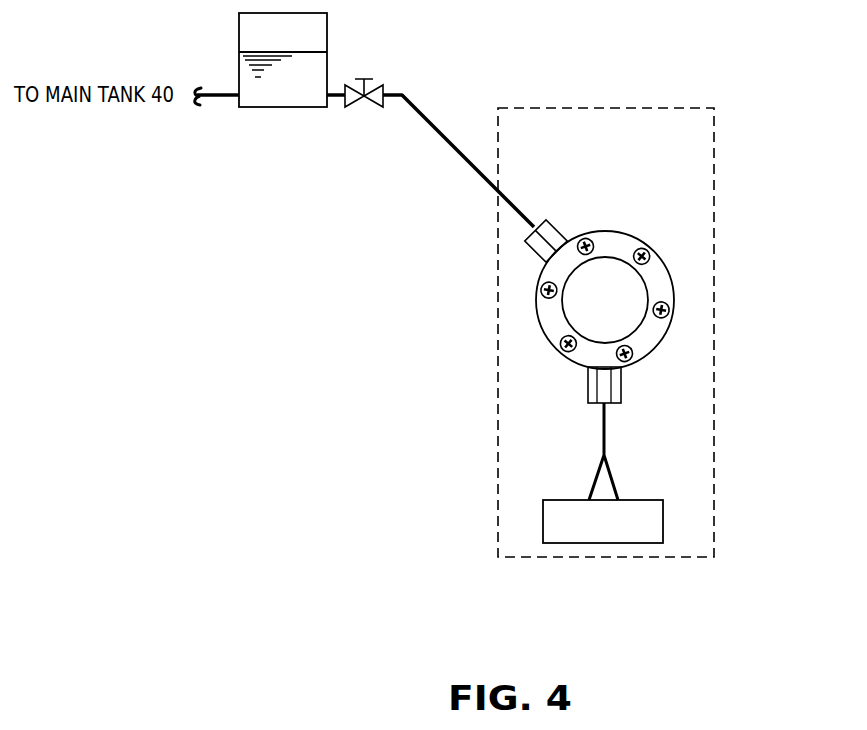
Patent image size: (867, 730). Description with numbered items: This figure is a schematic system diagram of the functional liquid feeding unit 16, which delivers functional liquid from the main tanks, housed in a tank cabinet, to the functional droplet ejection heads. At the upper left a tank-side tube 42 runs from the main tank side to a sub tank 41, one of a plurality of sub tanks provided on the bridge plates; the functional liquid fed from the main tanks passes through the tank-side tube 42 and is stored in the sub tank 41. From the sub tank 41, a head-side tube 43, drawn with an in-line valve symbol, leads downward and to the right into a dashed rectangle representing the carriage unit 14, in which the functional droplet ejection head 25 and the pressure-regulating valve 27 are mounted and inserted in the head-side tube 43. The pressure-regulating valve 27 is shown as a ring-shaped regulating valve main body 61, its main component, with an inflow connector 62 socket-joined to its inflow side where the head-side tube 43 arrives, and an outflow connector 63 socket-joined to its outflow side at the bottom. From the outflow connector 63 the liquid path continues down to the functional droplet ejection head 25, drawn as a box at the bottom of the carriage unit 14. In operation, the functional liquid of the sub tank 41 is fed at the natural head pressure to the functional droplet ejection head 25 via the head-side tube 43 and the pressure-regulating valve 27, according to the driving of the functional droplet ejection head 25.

The carriage unit 14 is at (702, 107).
The functional liquid feeding unit 16 is at (240, 271).
The functional droplet ejection head 25 is at (543, 511).
The pressure-regulating valve 27 is at (772, 240).
The sub tank 41 is at (283, 107).
The tank-side tube 42 is at (212, 104).
The head-side tube 43 is at (420, 204).
The regulating valve main body 61 is at (667, 287).
The inflow connector 62 is at (557, 205).
The outflow connector 63 is at (645, 384).